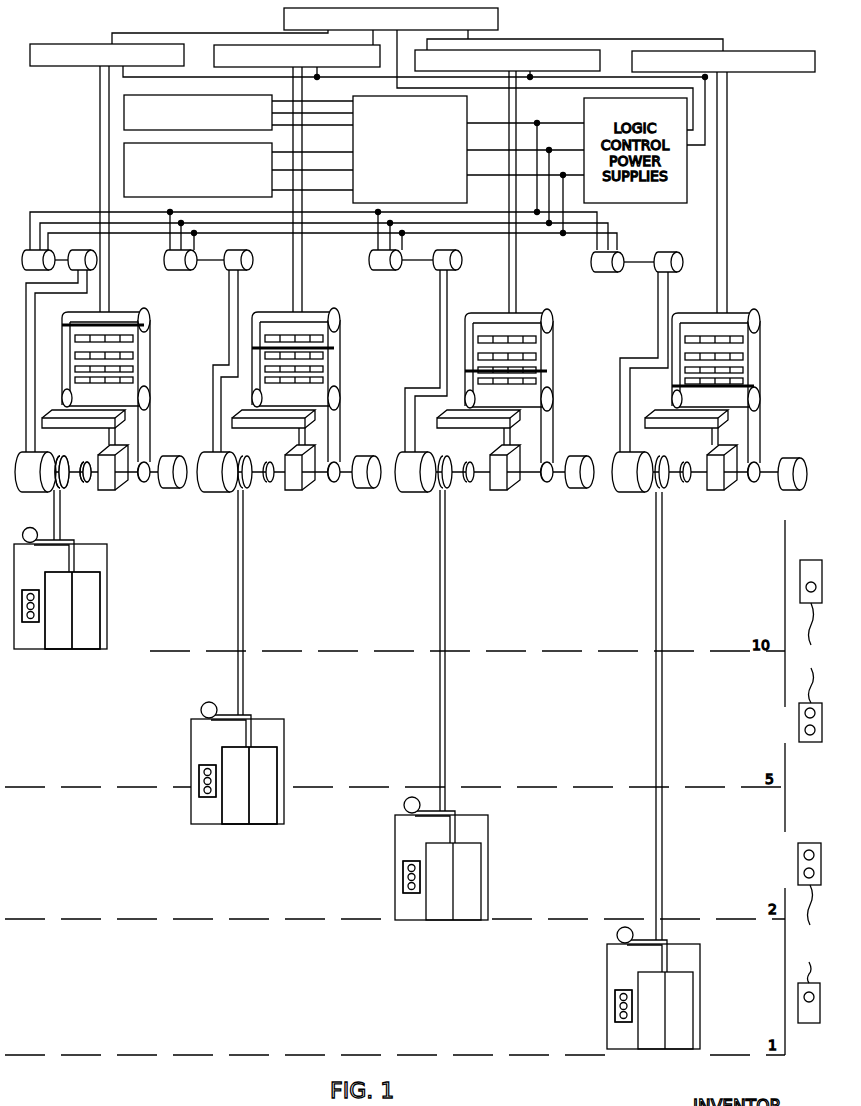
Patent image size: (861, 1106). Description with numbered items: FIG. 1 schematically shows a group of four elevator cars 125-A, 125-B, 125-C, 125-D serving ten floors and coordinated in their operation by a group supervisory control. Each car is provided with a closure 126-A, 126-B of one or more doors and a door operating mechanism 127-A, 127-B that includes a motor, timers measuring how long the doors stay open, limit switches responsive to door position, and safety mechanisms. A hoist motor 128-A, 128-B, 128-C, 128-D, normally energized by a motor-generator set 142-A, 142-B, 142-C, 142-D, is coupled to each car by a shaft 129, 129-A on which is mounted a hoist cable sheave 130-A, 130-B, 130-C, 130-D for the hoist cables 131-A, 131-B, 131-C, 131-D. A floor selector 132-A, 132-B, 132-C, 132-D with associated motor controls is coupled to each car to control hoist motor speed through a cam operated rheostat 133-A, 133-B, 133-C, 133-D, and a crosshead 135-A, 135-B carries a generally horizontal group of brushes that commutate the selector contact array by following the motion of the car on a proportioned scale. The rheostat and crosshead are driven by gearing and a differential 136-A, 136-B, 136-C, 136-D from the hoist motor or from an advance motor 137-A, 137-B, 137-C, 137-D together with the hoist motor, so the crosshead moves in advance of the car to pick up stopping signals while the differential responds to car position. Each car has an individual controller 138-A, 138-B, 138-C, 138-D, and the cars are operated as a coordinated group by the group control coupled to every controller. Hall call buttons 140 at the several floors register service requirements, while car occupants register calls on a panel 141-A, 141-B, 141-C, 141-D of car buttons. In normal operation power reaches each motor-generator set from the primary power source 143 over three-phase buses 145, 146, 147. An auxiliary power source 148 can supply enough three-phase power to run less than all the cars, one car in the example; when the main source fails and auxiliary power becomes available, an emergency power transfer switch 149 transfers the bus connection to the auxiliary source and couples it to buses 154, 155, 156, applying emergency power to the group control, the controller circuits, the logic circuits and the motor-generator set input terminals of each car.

The shaft 129 is at (498, 14).
The controller 138-A is at (104, 44).
The controller 138-B is at (272, 45).
The controller 138-C is at (510, 50).
The controller 138-D is at (727, 51).
The primary power source 143 is at (214, 95).
The bus 145 is at (304, 104).
The bus 146 is at (342, 110).
The bus 147 is at (342, 126).
The auxiliary power source 148 is at (198, 170).
The emergency power transfer switch 149 is at (410, 149).
The bus 154 is at (495, 104).
The bus 155 is at (497, 132).
The bus 156 is at (497, 158).
The motor-generator set 142-A is at (98, 246).
The motor-generator set 142-B is at (253, 246).
The motor-generator set 142-C is at (463, 246).
The motor-generator set 142-D is at (690, 249).
The floor selector 132-A is at (117, 312).
The floor selector 132-B is at (308, 312).
The floor selector 132-C is at (520, 313).
The floor selector 132-D is at (732, 313).
The crosshead 135-A is at (148, 330).
The crosshead 135-B is at (324, 346).
The cam operated rheostat 133-A is at (125, 424).
The cam operated rheostat 133-B is at (315, 424).
The cam operated rheostat 133-C is at (520, 424).
The cam operated rheostat 133-D is at (728, 424).
The hoist motor 128-A is at (32, 452).
The hoist motor 128-B is at (228, 490).
The hoist motor 128-C is at (432, 490).
The hoist motor 128-D is at (643, 490).
The shaft 129-A is at (58, 470).
The hoist cable sheave 130-A is at (68, 490).
The hoist cable sheave 130-B is at (255, 490).
The hoist cable sheave 130-C is at (455, 490).
The hoist cable sheave 130-D is at (673, 490).
The differential 136-A is at (105, 488).
The differential 136-B is at (292, 488).
The differential 136-C is at (492, 488).
The differential 136-D is at (712, 488).
The advance motor 137-A is at (168, 492).
The advance motor 137-B is at (372, 492).
The advance motor 137-C is at (582, 492).
The advance motor 137-D is at (790, 492).
The hoist cables 131-A is at (58, 512).
The hoist cables 131-B is at (246, 590).
The hoist cables 131-C is at (450, 590).
The hoist cables 131-D is at (665, 590).
The door operating mechanism 127-A is at (40, 511).
The door operating mechanism 127-B is at (216, 694).
The elevator car 125-A is at (104, 553).
The elevator car 125-B is at (199, 733).
The elevator car 125-C is at (396, 902).
The elevator car 125-D is at (608, 1040).
The closure 126-A is at (92, 600).
The closure 126-B is at (275, 800).
The car button panel 141-A is at (35, 622).
The car button panel 141-B is at (199, 795).
The car button panel 141-C is at (403, 866).
The car button panel 141-D is at (616, 997).
The hall call buttons 140 is at (808, 791).